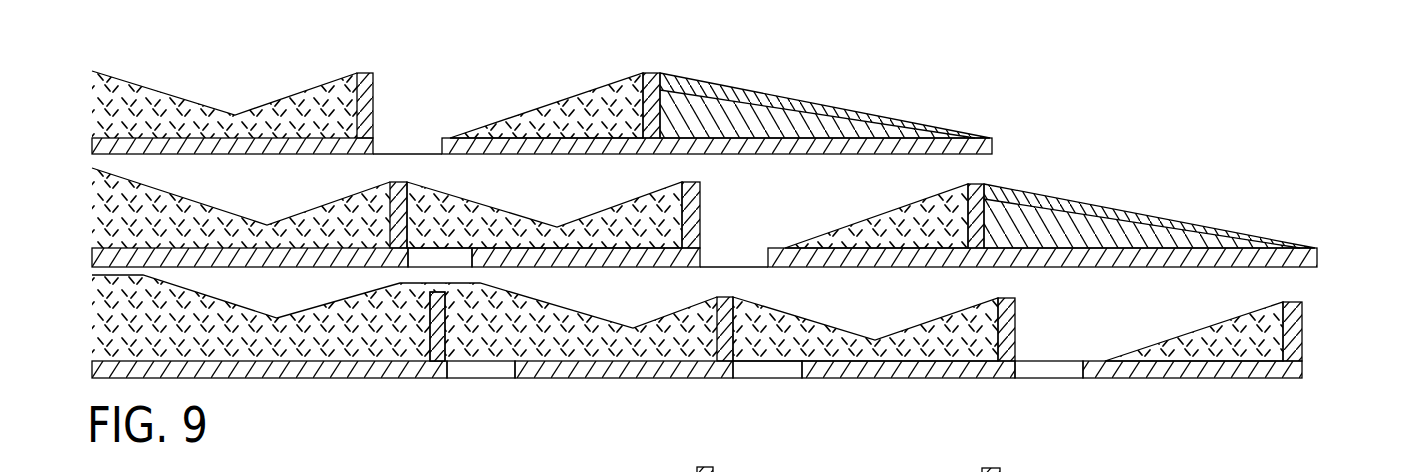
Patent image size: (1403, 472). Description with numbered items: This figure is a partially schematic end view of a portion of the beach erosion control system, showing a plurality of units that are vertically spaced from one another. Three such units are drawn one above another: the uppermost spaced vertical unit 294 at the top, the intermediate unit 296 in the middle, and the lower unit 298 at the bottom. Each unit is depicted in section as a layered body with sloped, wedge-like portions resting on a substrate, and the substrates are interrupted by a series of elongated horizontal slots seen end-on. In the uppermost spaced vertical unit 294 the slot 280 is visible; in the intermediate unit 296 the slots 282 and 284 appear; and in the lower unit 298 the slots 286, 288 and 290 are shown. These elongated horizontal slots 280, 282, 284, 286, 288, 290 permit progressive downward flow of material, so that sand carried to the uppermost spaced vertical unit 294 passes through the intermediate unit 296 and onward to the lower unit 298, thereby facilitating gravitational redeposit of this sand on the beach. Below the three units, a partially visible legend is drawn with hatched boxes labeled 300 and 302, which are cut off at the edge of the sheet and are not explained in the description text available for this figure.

The elongated horizontal slot 280 is at (417, 138).
The elongated horizontal slot 282 is at (725, 253).
The elongated horizontal slot 284 is at (465, 255).
The elongated horizontal slot 286 is at (1042, 370).
The elongated horizontal slot 288 is at (770, 368).
The elongated horizontal slot 290 is at (500, 367).
The uppermost spaced vertical unit 294 is at (895, 113).
The intermediate unit 296 is at (1238, 230).
The lower unit 298 is at (1325, 345).
The legend item 300 is at (563, 471).
The legend item 302 is at (767, 471).